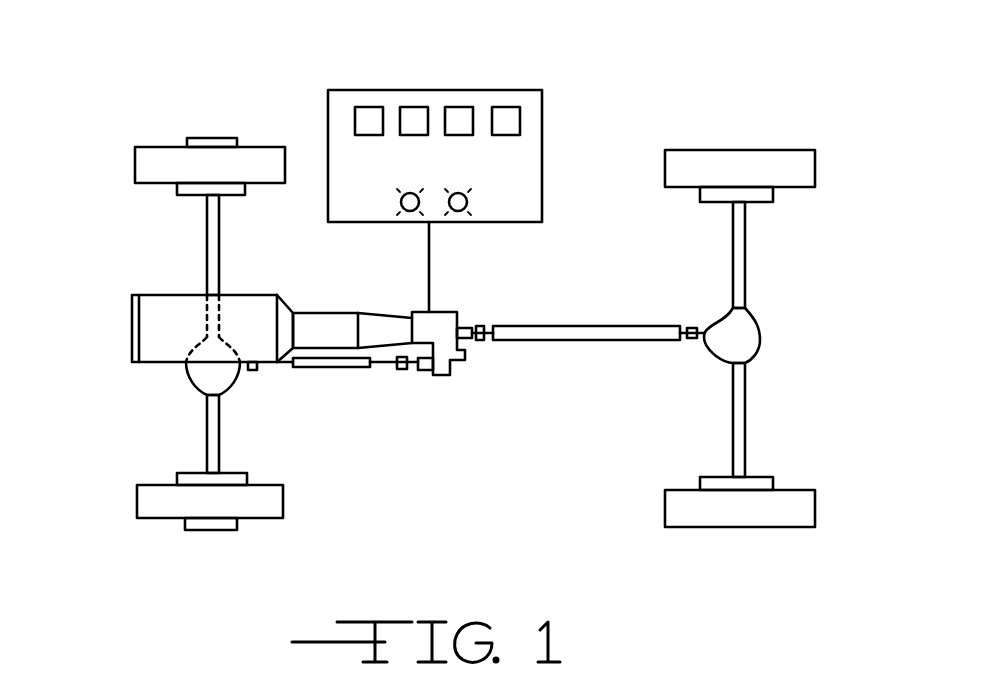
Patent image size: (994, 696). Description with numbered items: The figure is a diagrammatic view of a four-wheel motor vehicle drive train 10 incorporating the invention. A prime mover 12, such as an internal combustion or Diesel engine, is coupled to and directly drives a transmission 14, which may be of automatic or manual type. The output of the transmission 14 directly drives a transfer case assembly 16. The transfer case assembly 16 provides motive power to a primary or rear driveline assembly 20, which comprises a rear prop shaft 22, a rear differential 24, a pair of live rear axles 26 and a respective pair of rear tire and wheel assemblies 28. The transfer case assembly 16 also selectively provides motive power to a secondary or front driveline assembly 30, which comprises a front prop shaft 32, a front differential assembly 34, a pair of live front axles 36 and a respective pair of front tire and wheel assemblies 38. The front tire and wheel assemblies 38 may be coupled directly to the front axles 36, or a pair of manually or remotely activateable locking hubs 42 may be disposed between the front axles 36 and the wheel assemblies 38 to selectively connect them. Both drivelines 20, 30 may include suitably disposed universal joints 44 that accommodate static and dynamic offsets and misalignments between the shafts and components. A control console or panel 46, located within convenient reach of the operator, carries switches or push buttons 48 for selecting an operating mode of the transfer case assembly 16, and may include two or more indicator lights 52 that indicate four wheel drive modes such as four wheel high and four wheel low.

The four-wheel vehicle drive train 10 is at (628, 48).
The prime mover 12 is at (148, 327).
The transmission 14 is at (318, 326).
The transfer case assembly 16 is at (445, 306).
The primary or rear driveline assembly 20 is at (577, 430).
The primary or rear prop shaft 22 is at (553, 326).
The primary or rear differential 24 is at (750, 337).
The primary or rear axles 26 is at (745, 250).
The primary or rear tire and wheel assemblies 28 is at (754, 148).
The secondary or front driveline assembly 30 is at (368, 437).
The secondary or front prop shaft 32 is at (320, 367).
The secondary or front differential assembly 34 is at (205, 377).
The secondary or front axles 36 is at (219, 232).
The secondary or front tire and wheel assemblies 38 is at (253, 135).
The locking hubs 42 is at (197, 138).
The universal joints 44 is at (403, 370).
The control console or panel 46 is at (376, 100).
The switches or push buttons 48 is at (492, 107).
The indicator lights 52 is at (405, 212).